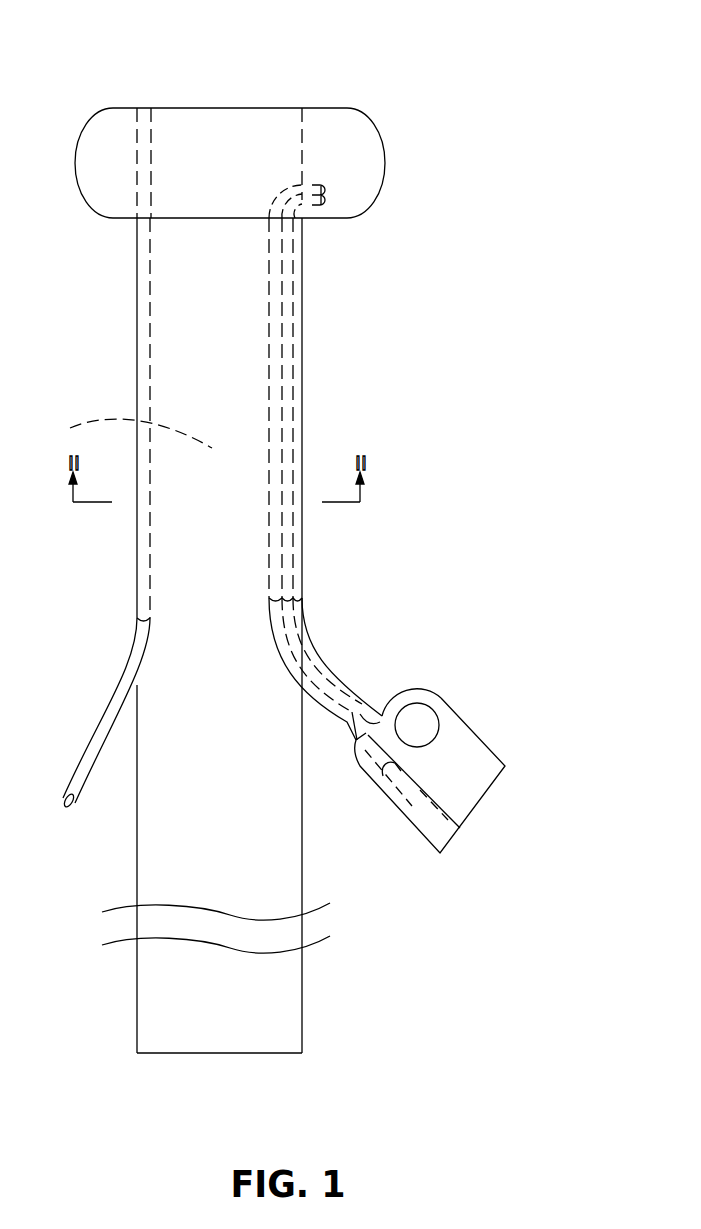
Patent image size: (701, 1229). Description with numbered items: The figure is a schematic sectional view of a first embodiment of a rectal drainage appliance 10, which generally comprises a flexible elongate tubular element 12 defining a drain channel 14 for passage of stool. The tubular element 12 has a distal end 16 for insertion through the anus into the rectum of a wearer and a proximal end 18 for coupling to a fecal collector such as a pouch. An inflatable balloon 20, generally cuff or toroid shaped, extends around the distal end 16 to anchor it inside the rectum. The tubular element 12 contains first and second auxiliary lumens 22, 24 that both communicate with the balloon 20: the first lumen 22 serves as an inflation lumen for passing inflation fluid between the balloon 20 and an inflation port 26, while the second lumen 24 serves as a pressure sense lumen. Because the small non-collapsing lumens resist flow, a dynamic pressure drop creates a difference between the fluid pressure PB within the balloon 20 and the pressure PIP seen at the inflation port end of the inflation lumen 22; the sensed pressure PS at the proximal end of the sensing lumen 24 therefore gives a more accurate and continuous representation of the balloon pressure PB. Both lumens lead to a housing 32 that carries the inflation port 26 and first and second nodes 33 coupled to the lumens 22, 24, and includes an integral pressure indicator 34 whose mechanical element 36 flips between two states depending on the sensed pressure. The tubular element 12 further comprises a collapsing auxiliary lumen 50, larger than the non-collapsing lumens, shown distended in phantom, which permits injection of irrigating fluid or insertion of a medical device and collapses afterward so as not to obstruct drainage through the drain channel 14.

The rectal drainage appliance 10 is at (437, 338).
The flexible elongate tubular element 12 is at (157, 862).
The drain channel 14 is at (129, 433).
The distal end 16 is at (273, 86).
The proximal end 18 is at (210, 1074).
The inflatable balloon 20 is at (388, 163).
The first auxiliary lumen 22 is at (278, 285).
The second auxiliary lumen 24 is at (287, 312).
The inflation port 26 is at (443, 827).
The housing 32 is at (505, 766).
The first and second nodes 33 is at (335, 730).
The pressure indicator 34 is at (463, 693).
The mechanical element 36 is at (417, 735).
The collapsing auxiliary lumen 50 is at (143, 365).
The fluid pressure within the balloon PB is at (346, 131).
The sensed pressure PS is at (381, 706).
The fluid pressure at the inflation port PIP is at (420, 816).